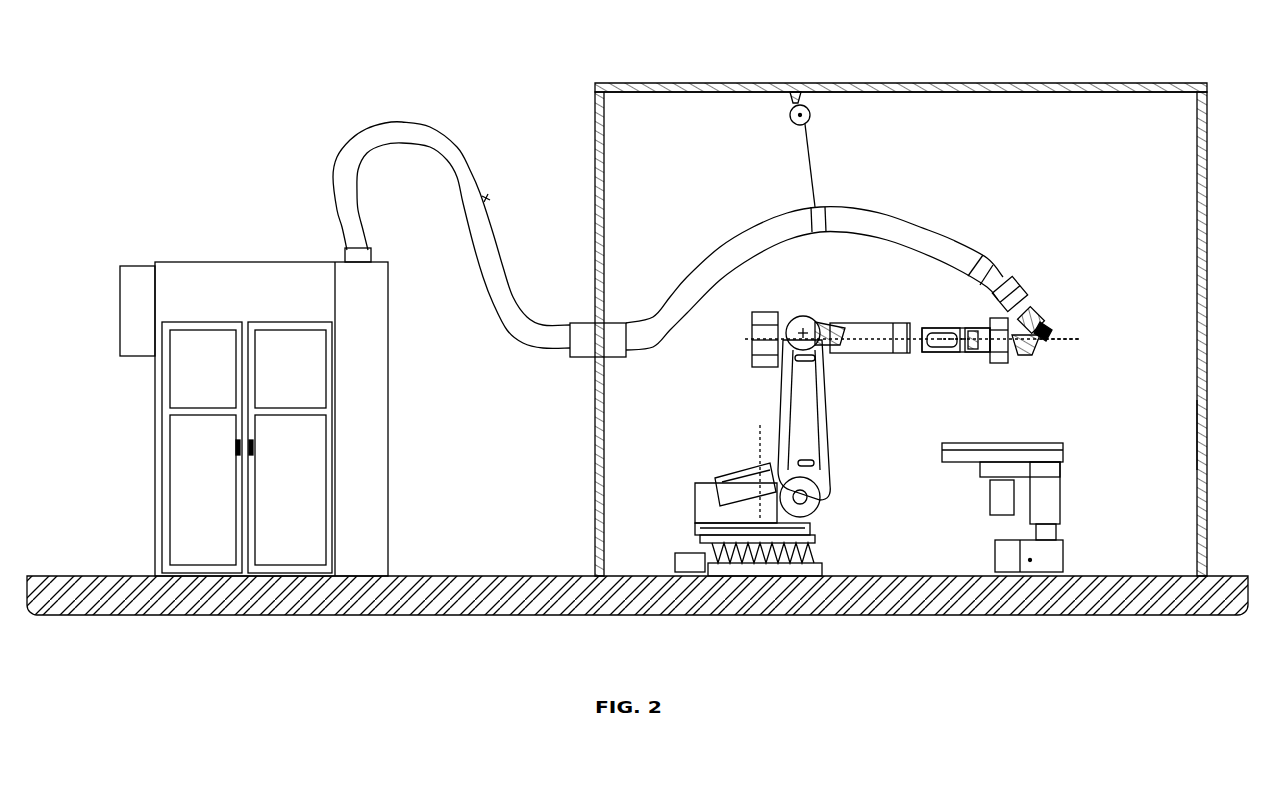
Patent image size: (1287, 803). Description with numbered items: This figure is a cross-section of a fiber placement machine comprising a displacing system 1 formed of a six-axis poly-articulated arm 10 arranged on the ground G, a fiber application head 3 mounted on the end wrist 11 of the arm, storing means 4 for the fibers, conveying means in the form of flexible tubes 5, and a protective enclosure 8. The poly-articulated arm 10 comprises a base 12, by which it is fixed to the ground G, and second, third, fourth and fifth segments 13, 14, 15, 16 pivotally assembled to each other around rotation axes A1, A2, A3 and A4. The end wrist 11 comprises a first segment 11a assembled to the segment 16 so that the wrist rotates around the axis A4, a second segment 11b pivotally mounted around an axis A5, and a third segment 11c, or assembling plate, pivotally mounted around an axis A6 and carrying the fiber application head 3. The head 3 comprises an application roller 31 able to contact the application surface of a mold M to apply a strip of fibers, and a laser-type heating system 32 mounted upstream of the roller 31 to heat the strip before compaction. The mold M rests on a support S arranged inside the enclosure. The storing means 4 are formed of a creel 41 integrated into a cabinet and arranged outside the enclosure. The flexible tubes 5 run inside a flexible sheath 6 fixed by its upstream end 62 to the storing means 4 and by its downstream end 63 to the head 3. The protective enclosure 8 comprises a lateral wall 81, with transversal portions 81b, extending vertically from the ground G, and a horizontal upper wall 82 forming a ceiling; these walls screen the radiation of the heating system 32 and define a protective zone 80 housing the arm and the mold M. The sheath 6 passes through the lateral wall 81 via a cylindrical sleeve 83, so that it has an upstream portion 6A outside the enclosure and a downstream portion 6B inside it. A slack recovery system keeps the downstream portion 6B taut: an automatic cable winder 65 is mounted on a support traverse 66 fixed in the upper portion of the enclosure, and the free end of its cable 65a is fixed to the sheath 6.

The displacing system 1 is at (873, 417).
The fiber application head 3 is at (1046, 321).
The storing means 4 is at (155, 428).
The creel 41 is at (155, 489).
The flexible tubes 5 is at (346, 153).
The flexible sheath 6 is at (440, 207).
The upstream portion of the sheath 6A is at (447, 133).
The downstream portion of the sheath 6B is at (911, 215).
The protective enclosure 8 is at (930, 299).
The poly-articulated arm 10 is at (700, 483).
The end wrist 11 is at (963, 360).
The first segment of the end wrist 11a is at (930, 353).
The second segment of the end wrist 11b is at (980, 353).
The third segment of the end wrist 11c is at (995, 330).
The base 12 is at (812, 563).
The second segment 13 is at (736, 476).
The third segment 14 is at (822, 425).
The fourth segment 15 is at (781, 305).
The fifth segment 16 is at (905, 323).
The application roller 31 is at (1040, 345).
The heating system 32 is at (1046, 320).
The upstream end of the sheath 62 is at (345, 255).
The downstream end of the sheath 63 is at (1018, 283).
The automatic cable winder 65 is at (790, 116).
The cable 65a is at (809, 162).
The support traverse 66 is at (796, 92).
The protective zone 80 is at (1180, 338).
The lateral wall 81 is at (1207, 241).
The transversal portions 81b is at (1205, 430).
The upper wall 82 is at (975, 83).
The cylindrical sleeve 83 is at (578, 323).
The rotation axis A1 is at (755, 460).
The rotation axis A2 is at (810, 497).
The rotation axis A3 is at (804, 330).
The rotation axis A4 is at (891, 339).
The axis A5 is at (950, 330).
The axis A6 is at (1073, 339).
The ground G is at (64, 576).
The mold M is at (1055, 446).
The support S is at (1063, 517).